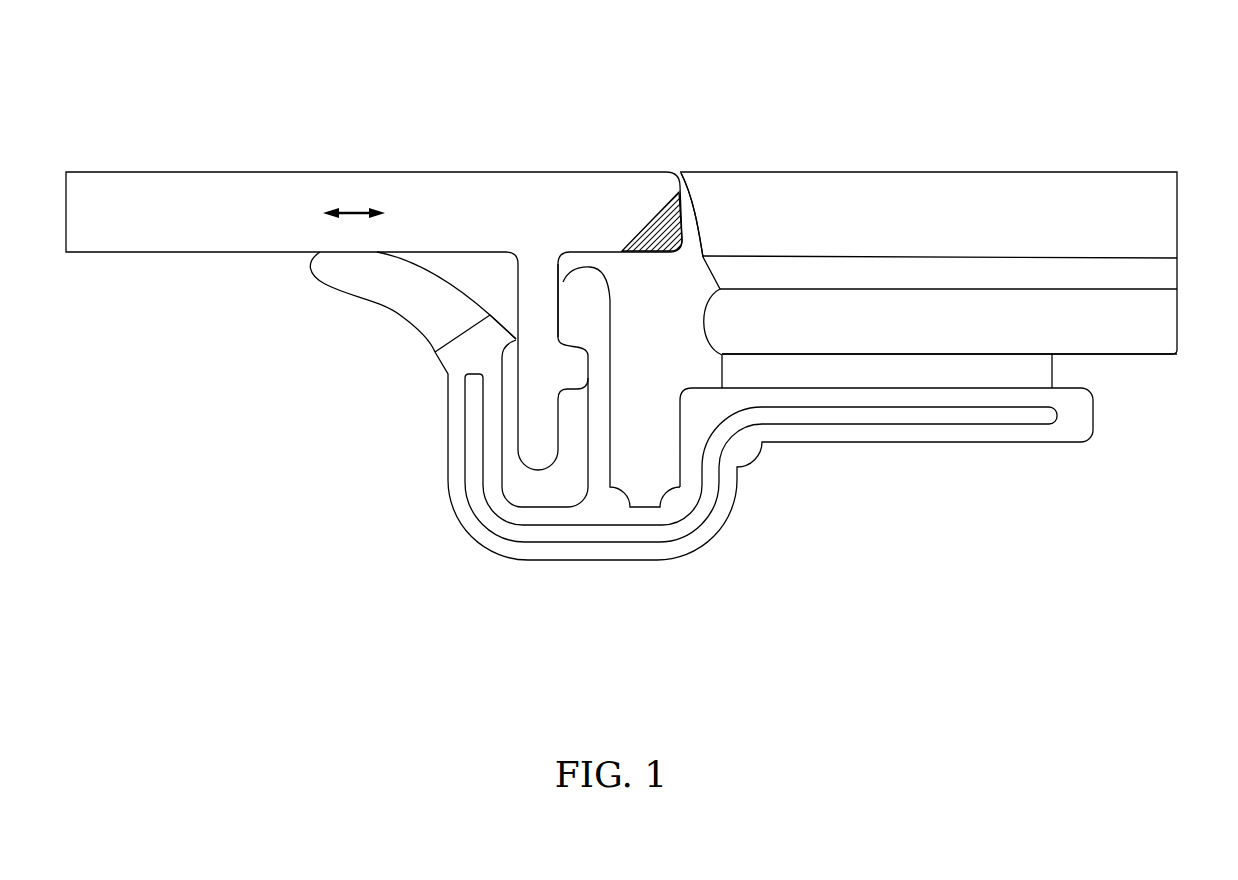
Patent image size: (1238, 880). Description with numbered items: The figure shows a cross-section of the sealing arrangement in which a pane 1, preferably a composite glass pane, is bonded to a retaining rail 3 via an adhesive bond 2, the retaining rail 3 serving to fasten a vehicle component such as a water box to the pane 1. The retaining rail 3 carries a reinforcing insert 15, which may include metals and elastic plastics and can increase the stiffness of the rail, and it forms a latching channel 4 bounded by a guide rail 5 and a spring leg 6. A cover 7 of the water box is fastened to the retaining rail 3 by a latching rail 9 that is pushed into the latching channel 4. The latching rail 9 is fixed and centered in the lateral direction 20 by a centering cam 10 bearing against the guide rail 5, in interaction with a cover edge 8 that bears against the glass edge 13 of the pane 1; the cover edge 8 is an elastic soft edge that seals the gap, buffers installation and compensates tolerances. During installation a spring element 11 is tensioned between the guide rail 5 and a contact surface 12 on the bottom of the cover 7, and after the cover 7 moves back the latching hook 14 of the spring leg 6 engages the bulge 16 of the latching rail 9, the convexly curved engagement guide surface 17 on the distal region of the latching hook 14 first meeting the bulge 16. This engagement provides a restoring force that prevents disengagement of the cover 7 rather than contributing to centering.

The pane 1 is at (1140, 343).
The adhesive bond 2 is at (960, 357).
The retaining rail 3 is at (915, 445).
The latching channel 4 is at (557, 473).
The guide rail 5 is at (450, 472).
The spring leg 6 is at (617, 433).
The cover 7 is at (293, 165).
The cover edge 8 is at (683, 256).
The latching rail 9 is at (537, 293).
The centering cam 10 is at (505, 330).
The spring element 11 is at (405, 312).
The contact surface 12 is at (460, 254).
The glass edge 13 is at (687, 210).
The latching hook 14 is at (583, 333).
The reinforcing insert 15 is at (848, 415).
The bulge 16 is at (577, 367).
The engagement guide surface 17 is at (572, 277).
The lateral direction 20 is at (353, 213).